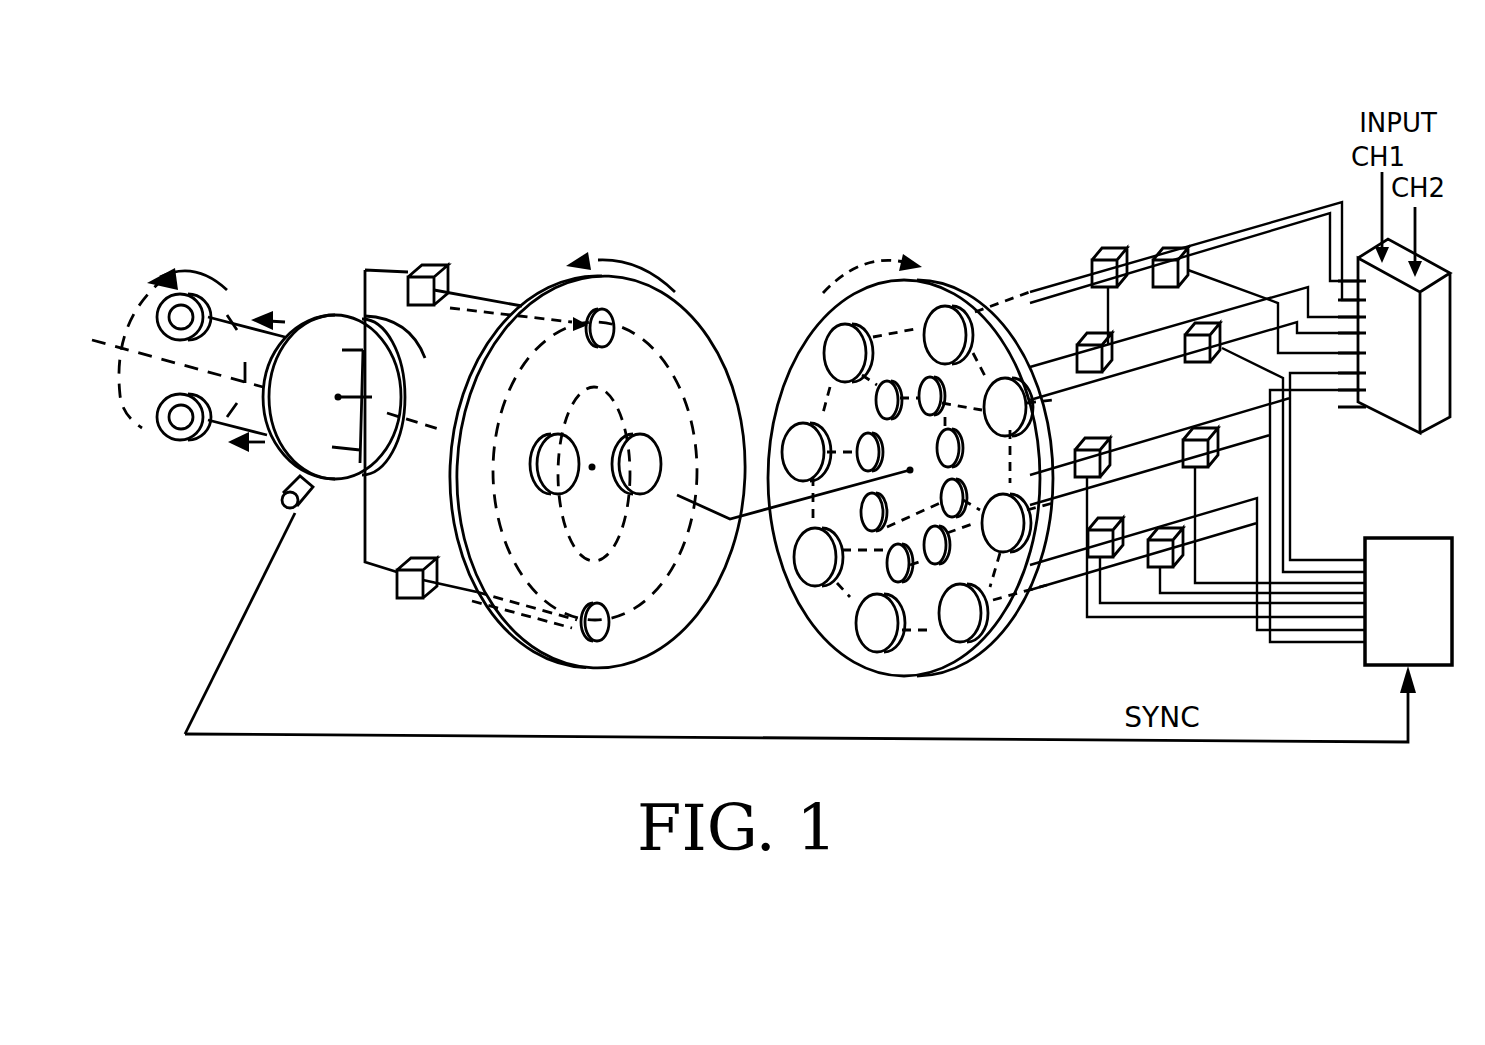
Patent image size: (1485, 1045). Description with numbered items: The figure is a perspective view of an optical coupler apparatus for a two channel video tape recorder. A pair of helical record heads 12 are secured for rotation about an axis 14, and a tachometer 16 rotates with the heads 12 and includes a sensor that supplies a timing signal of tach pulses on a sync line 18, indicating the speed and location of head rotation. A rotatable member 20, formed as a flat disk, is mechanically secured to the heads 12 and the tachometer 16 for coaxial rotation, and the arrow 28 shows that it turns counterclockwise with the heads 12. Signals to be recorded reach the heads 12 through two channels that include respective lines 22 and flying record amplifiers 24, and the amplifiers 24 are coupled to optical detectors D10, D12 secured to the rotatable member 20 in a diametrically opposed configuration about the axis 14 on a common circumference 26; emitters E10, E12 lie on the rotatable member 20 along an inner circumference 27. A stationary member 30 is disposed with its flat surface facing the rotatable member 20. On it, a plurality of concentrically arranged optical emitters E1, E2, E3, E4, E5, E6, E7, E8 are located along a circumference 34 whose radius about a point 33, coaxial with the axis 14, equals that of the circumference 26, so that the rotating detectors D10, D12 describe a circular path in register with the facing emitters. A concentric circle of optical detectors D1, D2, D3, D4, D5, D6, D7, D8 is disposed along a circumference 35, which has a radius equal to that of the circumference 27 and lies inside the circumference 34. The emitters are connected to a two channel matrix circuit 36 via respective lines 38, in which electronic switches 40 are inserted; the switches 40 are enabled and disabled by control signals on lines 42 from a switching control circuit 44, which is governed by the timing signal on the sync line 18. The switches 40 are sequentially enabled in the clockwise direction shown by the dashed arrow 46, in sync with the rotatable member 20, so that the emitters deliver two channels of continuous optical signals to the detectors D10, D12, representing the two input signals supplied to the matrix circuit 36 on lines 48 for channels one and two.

The helical record heads 12 is at (175, 425).
The axis 14 is at (358, 352).
The tachometer 16 is at (302, 518).
The sync line 18 is at (478, 735).
The rotatable member 20 is at (655, 652).
The lines 22 is at (412, 342).
The flying record amplifiers 24 is at (443, 648).
The circumference 26 is at (648, 340).
The circumference 27 is at (623, 403).
The arrow 28 is at (636, 262).
The stationary member 30 is at (975, 660).
The point 33 is at (800, 505).
The circumference 34 is at (845, 588).
The circumference 35 is at (920, 567).
The matrix circuit 36 is at (1396, 424).
The lines 38 is at (1076, 450).
The electronic switches 40 is at (1170, 248).
The lines 42 is at (1208, 603).
The switching control circuit 44 is at (1383, 667).
The dashed arrow 46 is at (840, 262).
The lines 48 is at (1380, 235).
The optical emitter E1 is at (948, 335).
The optical emitter E2 is at (1008, 407).
The optical emitter E3 is at (1006, 523).
The optical emitter E4 is at (963, 613).
The optical emitter E5 is at (880, 623).
The optical emitter E6 is at (818, 557).
The optical emitter E7 is at (806, 452).
The optical emitter E8 is at (848, 353).
The optical detector D1 is at (949, 393).
The optical detector D2 is at (968, 449).
The optical detector D3 is at (970, 493).
The optical detector D4 is at (953, 552).
The optical detector D5 is at (879, 563).
The optical detector D6 is at (894, 511).
The optical detector D7 is at (857, 441).
The optical detector D8 is at (896, 387).
The emitter E10 is at (546, 484).
The emitter E12 is at (628, 484).
The optical detector D10 is at (606, 344).
The optical detector D12 is at (609, 608).